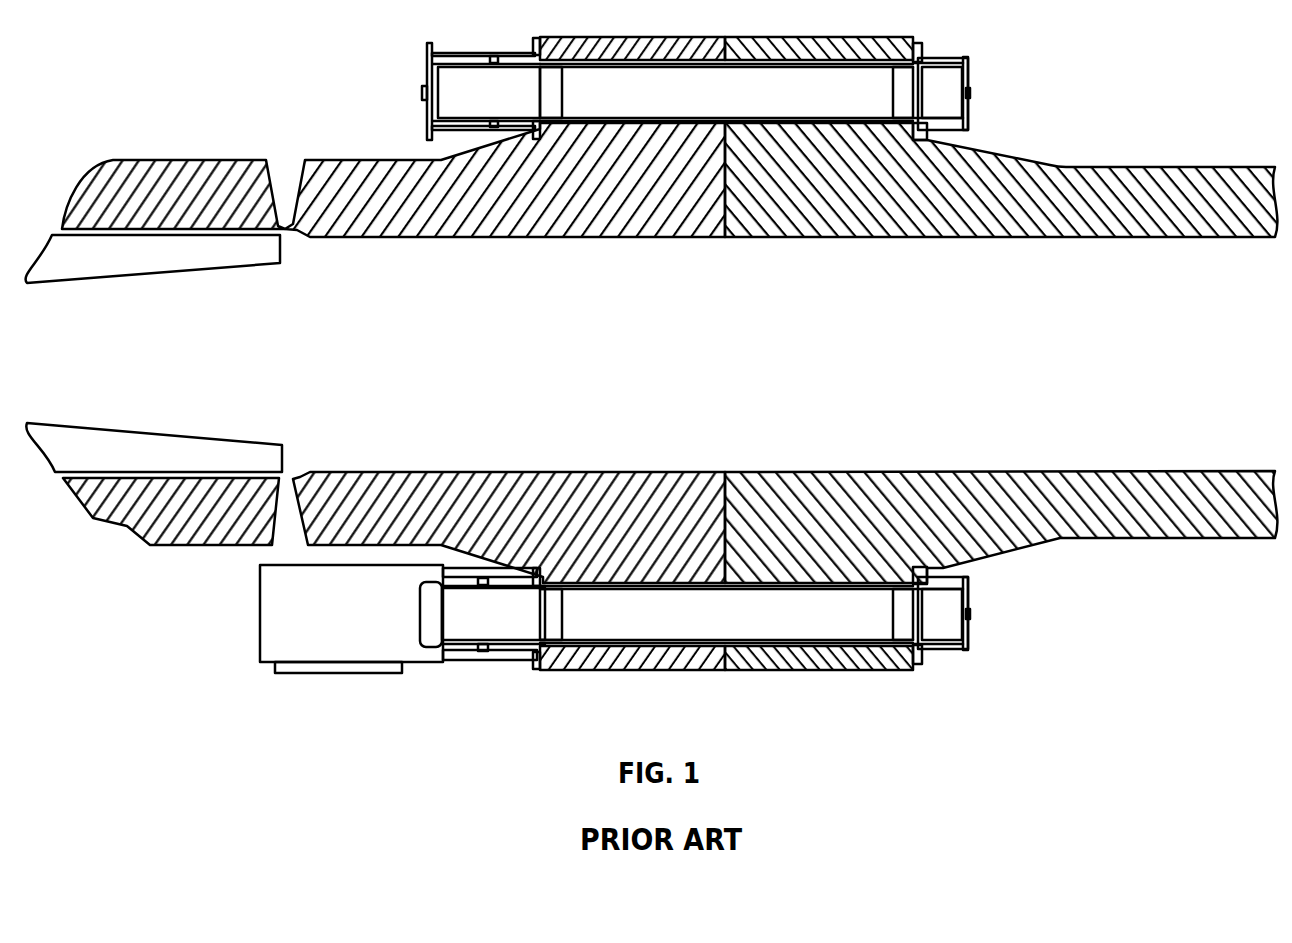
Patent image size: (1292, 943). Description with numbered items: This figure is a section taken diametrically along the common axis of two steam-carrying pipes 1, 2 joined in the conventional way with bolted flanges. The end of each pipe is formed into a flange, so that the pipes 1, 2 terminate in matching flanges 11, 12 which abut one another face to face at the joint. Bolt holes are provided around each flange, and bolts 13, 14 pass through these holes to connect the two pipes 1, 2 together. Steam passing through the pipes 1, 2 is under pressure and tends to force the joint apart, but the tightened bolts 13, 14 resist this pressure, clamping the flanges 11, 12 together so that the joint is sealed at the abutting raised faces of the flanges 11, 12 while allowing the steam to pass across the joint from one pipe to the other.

The pipe 1 is at (363, 170).
The pipe 2 is at (983, 150).
The flange 11 is at (577, 35).
The flange 12 is at (772, 35).
The bolt 13 is at (933, 70).
The bolt 14 is at (950, 623).